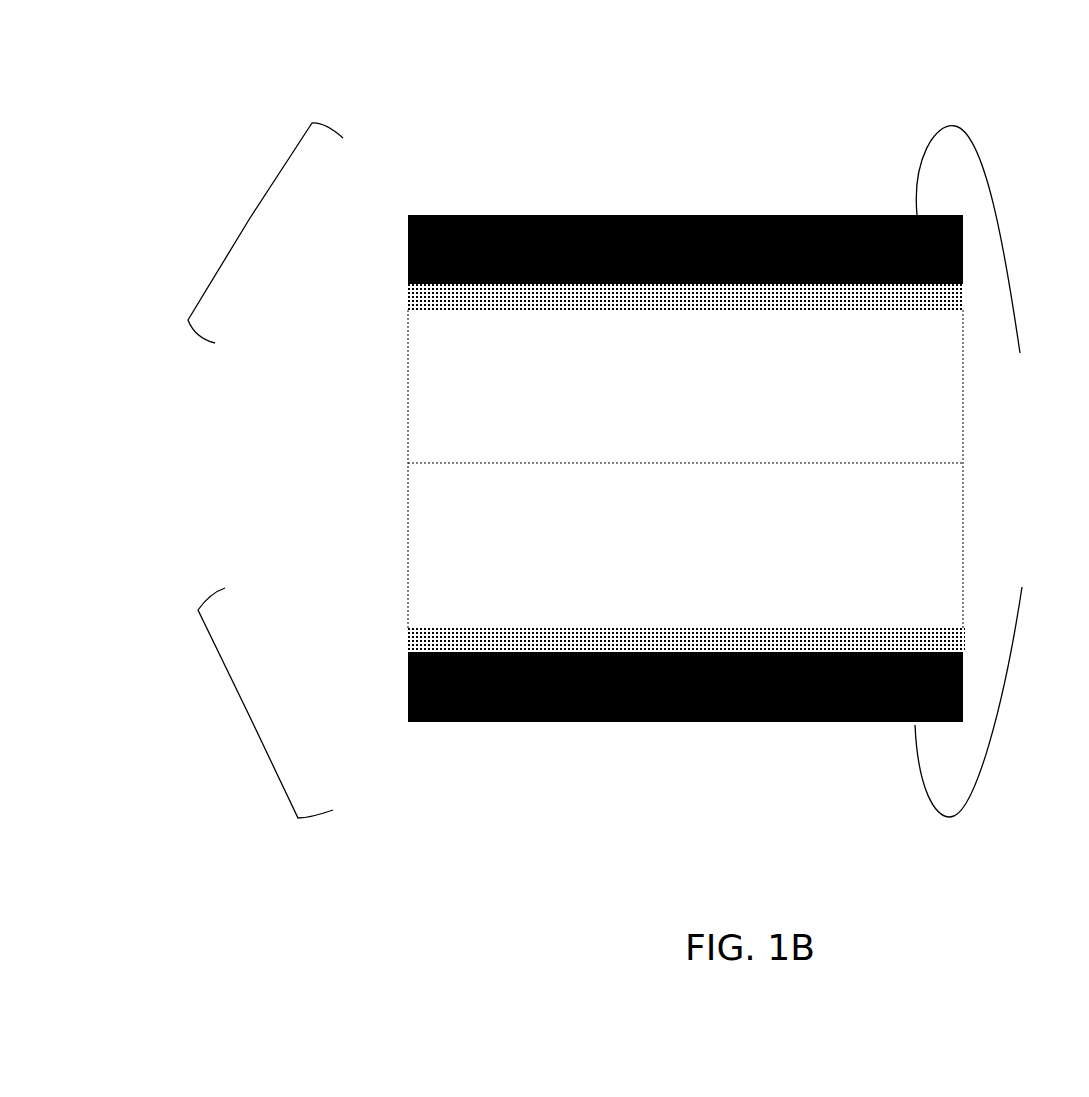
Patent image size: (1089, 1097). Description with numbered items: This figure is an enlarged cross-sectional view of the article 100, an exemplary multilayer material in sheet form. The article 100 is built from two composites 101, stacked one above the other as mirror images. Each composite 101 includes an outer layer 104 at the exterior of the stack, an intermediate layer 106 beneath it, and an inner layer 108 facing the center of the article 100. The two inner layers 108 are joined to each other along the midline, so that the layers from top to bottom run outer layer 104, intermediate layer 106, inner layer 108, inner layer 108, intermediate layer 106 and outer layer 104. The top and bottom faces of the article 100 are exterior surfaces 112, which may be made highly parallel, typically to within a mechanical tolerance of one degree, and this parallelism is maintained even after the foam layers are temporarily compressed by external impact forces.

The article 100 is at (572, 125).
The composite 101 is at (250, 218).
The outer layer 104 is at (407, 247).
The intermediate layer 106 is at (407, 298).
The inner layer 108 is at (412, 375).
The exterior surface 112 is at (974, 471).